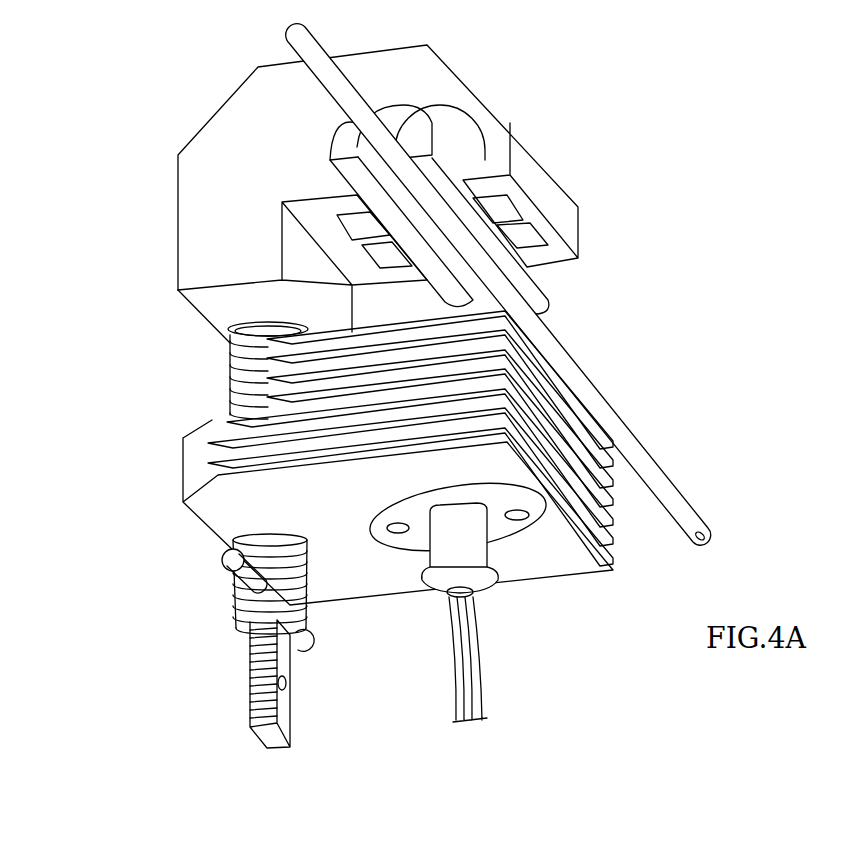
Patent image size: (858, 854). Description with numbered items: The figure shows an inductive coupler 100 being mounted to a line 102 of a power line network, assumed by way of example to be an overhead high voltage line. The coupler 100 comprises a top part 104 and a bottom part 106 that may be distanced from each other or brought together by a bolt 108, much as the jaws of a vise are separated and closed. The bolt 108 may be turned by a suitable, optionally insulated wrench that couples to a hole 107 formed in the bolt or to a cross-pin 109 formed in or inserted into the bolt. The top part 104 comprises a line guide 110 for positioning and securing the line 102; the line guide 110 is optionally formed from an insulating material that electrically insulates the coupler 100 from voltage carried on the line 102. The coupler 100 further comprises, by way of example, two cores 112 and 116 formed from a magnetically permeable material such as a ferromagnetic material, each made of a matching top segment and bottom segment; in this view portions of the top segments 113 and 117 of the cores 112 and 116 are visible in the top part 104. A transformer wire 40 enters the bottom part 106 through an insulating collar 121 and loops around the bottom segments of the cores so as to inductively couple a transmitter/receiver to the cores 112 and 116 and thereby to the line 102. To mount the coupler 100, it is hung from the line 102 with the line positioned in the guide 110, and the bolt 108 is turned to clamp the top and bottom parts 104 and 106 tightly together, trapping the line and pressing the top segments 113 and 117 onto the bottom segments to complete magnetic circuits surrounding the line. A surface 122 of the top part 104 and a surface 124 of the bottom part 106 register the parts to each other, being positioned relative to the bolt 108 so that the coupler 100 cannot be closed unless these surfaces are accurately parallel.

The inductive coupler 100 is at (463, 385).
The line 102 is at (296, 45).
The top part 104 is at (394, 194).
The bottom part 106 is at (344, 522).
The hole 107 is at (287, 683).
The bolt 108 is at (230, 405).
The cross-pin 109 is at (235, 592).
The line guide 110 is at (413, 125).
The core 112 is at (417, 210).
The top segment 113 is at (497, 207).
The core 116 is at (375, 262).
The top segment 117 is at (530, 243).
The insulating collar 121 is at (442, 559).
The surface 122 is at (317, 310).
The surface 124 is at (232, 388).
The transformer wire 40 is at (465, 680).